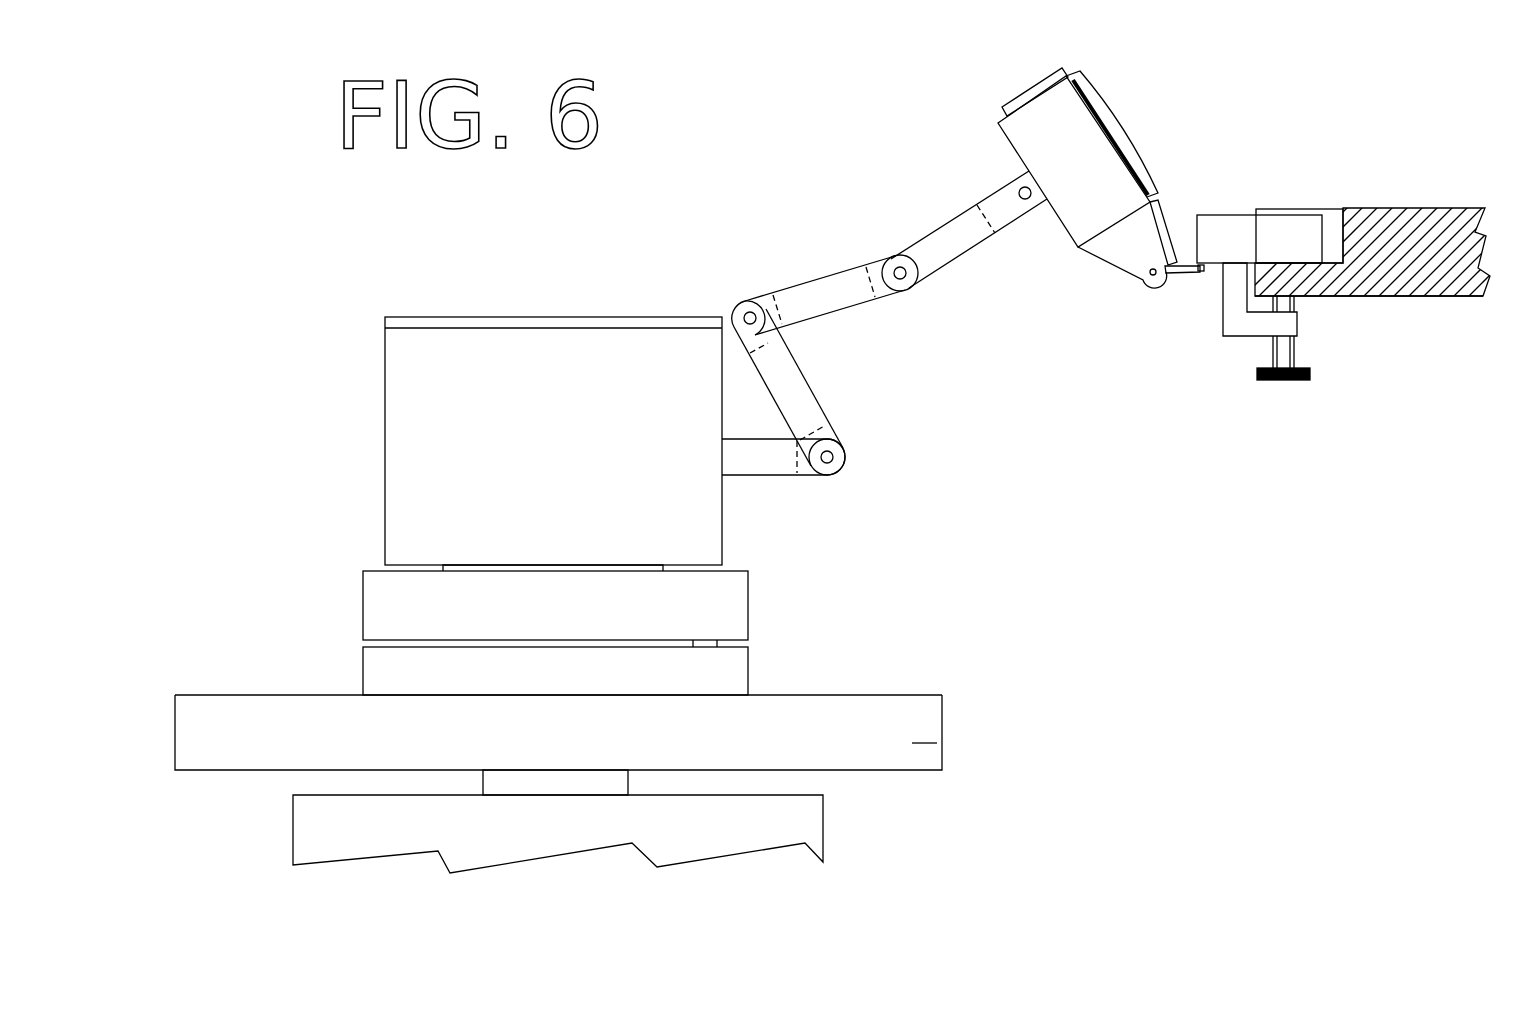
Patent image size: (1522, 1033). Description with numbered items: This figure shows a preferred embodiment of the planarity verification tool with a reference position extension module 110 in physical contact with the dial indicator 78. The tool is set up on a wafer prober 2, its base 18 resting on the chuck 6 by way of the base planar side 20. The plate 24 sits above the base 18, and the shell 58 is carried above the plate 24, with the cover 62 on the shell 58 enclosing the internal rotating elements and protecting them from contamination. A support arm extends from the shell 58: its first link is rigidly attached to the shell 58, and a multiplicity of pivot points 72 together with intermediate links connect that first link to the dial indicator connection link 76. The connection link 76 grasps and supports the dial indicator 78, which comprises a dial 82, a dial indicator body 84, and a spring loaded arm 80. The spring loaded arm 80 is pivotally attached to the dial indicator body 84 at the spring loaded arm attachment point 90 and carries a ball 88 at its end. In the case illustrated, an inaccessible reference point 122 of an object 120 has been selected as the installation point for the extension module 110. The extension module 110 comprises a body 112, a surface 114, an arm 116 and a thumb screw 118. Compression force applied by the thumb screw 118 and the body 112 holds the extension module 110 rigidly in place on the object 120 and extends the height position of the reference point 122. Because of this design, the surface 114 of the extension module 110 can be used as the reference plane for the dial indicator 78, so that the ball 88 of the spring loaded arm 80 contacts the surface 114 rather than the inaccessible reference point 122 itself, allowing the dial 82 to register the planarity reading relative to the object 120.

The wafer prober 2 is at (718, 825).
The chuck 6 is at (673, 742).
The base 18 is at (460, 646).
The base planar side 20 is at (558, 622).
The plate 24 is at (460, 583).
The shell 58 is at (447, 441).
The cover 62 is at (447, 281).
The pivot points 72 is at (833, 457).
The dial indicator connection link 76 is at (945, 215).
The dial indicator 78 is at (1082, 198).
The spring loaded arm 80 is at (1125, 324).
The dial 82 is at (1149, 113).
The dial indicator body 84 is at (969, 80).
The ball 88 is at (1146, 384).
The spring loaded arm attachment point 90 is at (1088, 317).
The reference position extension module 110 is at (1267, 171).
The body 112 is at (1341, 196).
The surface 114 is at (1167, 413).
The arm 116 is at (1365, 360).
The thumb screw 118 is at (1382, 408).
The object 120 is at (1381, 351).
The reference point 122 is at (1376, 274).